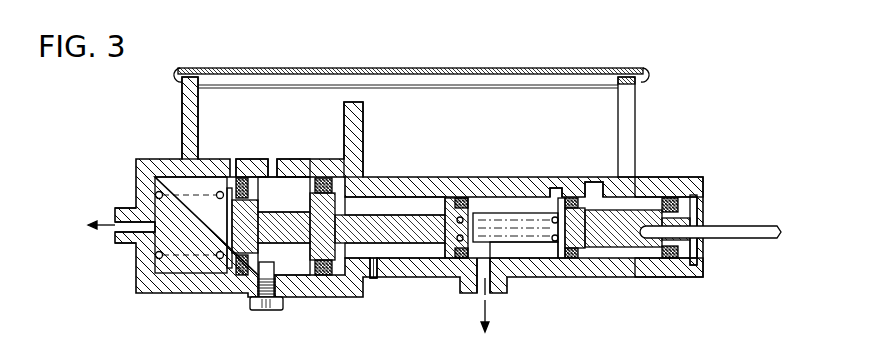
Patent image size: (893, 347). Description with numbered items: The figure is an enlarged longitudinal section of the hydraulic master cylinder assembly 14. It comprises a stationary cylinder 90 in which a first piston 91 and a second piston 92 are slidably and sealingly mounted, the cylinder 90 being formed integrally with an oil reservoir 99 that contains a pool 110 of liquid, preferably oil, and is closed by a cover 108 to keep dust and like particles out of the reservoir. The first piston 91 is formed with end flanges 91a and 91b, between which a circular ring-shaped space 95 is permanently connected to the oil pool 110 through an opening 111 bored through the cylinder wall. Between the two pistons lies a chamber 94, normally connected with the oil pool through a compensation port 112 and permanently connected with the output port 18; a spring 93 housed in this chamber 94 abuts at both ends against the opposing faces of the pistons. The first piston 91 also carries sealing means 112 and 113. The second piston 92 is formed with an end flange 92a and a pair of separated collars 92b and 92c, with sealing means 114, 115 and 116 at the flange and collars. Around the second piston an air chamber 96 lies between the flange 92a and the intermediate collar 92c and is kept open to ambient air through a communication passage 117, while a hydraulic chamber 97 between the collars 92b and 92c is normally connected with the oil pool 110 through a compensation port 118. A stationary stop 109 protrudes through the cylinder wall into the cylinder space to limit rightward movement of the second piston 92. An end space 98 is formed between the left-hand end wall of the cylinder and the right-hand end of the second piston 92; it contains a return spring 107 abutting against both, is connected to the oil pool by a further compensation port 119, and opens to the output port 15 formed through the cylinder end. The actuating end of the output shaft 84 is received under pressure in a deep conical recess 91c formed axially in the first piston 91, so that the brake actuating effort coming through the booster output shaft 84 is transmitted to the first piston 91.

The hydraulic master cylinder assembly 14 is at (211, 73).
The output port 15 is at (115, 228).
The output port 18 is at (488, 290).
The output shaft 84 is at (776, 240).
The stationary cylinder 90 is at (557, 278).
The first piston 91 is at (620, 240).
The end flange 91a is at (723, 227).
The end flange 91b is at (580, 196).
The deep conical recess 91c is at (698, 248).
The second piston 92 is at (424, 236).
The end flange 92a is at (472, 194).
The collar 92b is at (250, 180).
The intermediate collar 92c is at (338, 172).
The spring 93 is at (527, 242).
The chamber 94 is at (525, 206).
The circular ring-shaped space 95 is at (642, 196).
The air chamber 96 is at (383, 206).
The hydraulic chamber 97 is at (301, 176).
The end space 98 is at (214, 268).
The oil reservoir 99 is at (636, 112).
The return spring 107 is at (178, 258).
The cover 108 is at (283, 70).
The stationary stop 109 is at (278, 302).
The pool of liquid 110 is at (472, 100).
The opening 111 is at (600, 185).
The compensation port 112 is at (556, 186).
The sealing means 113 is at (562, 260).
The sealing means 114 is at (458, 200).
The sealing means 115 is at (252, 170).
The sealing means 116 is at (323, 180).
The communication passage 117 is at (374, 280).
The compensation port 118 is at (290, 172).
The compensation port 119 is at (230, 160).